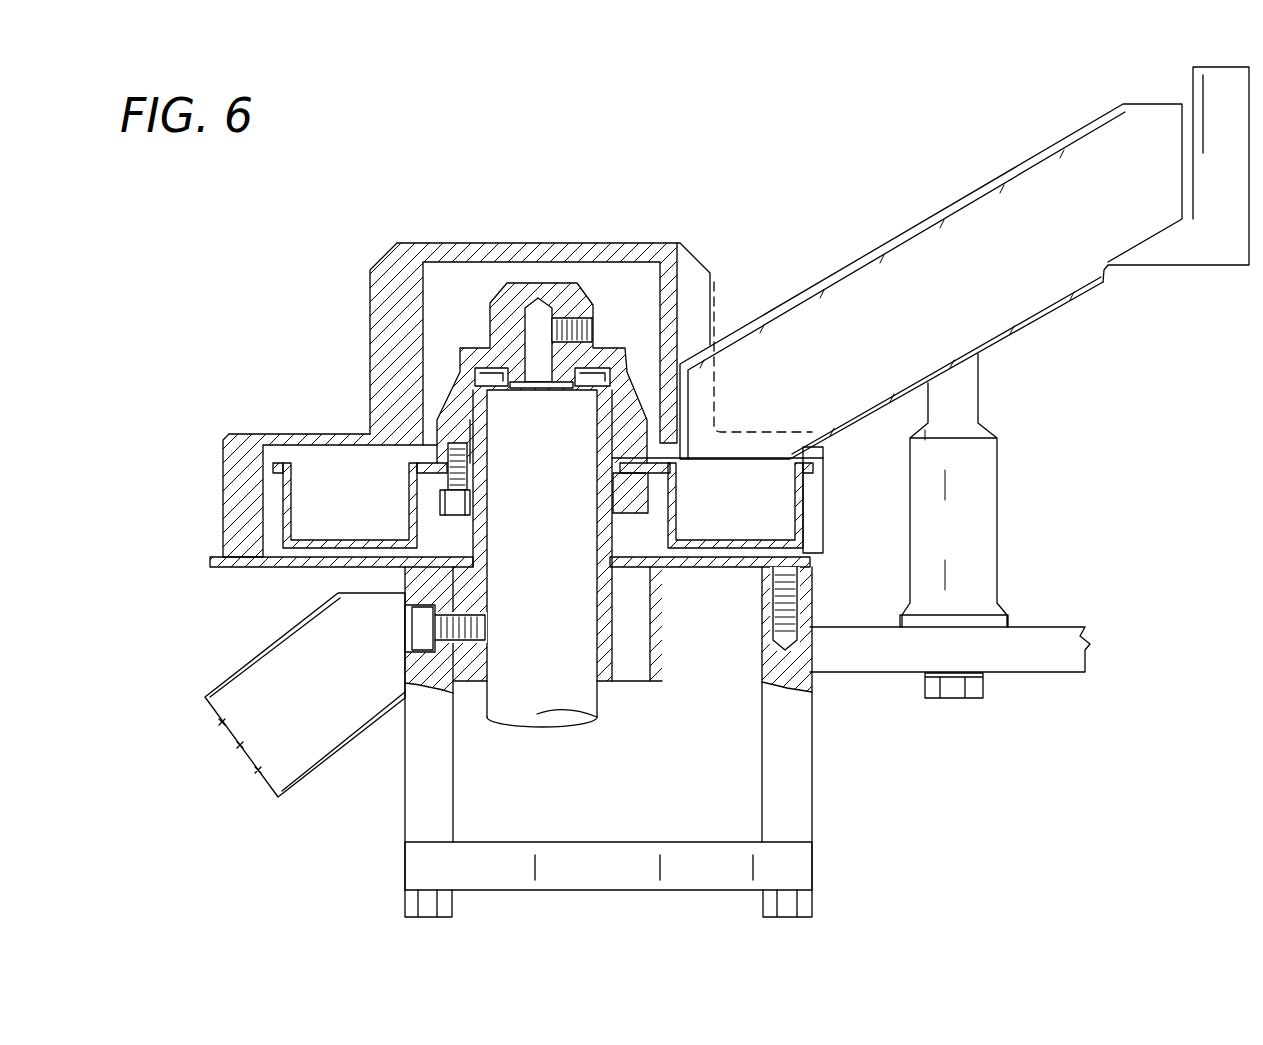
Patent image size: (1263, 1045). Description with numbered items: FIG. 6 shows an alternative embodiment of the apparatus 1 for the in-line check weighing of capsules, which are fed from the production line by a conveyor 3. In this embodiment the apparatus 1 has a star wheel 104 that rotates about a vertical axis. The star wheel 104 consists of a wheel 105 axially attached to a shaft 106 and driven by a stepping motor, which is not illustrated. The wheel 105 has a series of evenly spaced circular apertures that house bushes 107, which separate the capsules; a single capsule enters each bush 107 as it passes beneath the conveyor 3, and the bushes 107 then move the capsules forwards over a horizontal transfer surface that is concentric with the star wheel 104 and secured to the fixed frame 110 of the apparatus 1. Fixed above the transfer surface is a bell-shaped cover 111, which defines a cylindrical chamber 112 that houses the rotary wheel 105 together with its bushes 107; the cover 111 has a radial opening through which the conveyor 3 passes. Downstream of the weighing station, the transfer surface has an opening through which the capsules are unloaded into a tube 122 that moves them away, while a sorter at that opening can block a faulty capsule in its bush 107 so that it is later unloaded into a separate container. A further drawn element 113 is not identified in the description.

The apparatus 1 is at (597, 208).
The conveyor 3 is at (932, 279).
The star wheel 104 is at (448, 365).
The wheel 105 is at (277, 472).
The shaft 106 is at (518, 683).
The bushes 107 is at (287, 505).
The fixed frame 110 is at (787, 783).
The bell-shaped cover 111 is at (287, 438).
The cylindrical chamber 112 is at (280, 460).
The cover 113 is at (697, 308).
The tube 122 is at (285, 730).